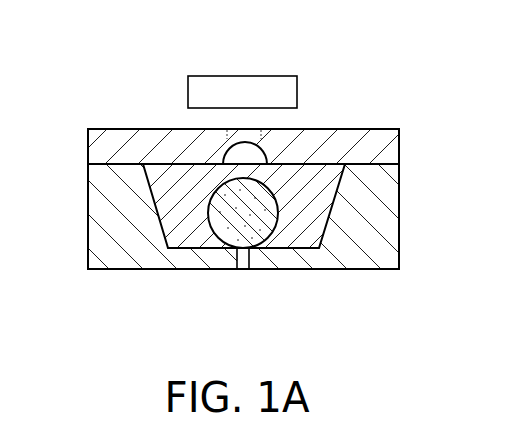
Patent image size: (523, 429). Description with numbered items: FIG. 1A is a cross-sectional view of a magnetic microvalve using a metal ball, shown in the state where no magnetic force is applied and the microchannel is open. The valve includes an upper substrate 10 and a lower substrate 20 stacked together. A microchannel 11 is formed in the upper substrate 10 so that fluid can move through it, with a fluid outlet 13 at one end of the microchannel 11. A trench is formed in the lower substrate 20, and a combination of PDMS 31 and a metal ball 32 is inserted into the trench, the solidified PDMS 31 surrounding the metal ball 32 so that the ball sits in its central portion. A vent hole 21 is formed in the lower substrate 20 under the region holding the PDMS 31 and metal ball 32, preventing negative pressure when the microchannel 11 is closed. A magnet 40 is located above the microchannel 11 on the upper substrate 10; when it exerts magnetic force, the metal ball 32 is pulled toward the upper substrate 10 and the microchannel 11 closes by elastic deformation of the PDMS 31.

The upper substrate 10 is at (385, 135).
The microchannel 11 is at (256, 150).
The fluid outlet 13 is at (239, 129).
The lower substrate 20 is at (387, 205).
The vent hole 21 is at (248, 252).
The PDMS 31 is at (165, 205).
The metal ball 32 is at (221, 247).
The magnet 40 is at (240, 82).